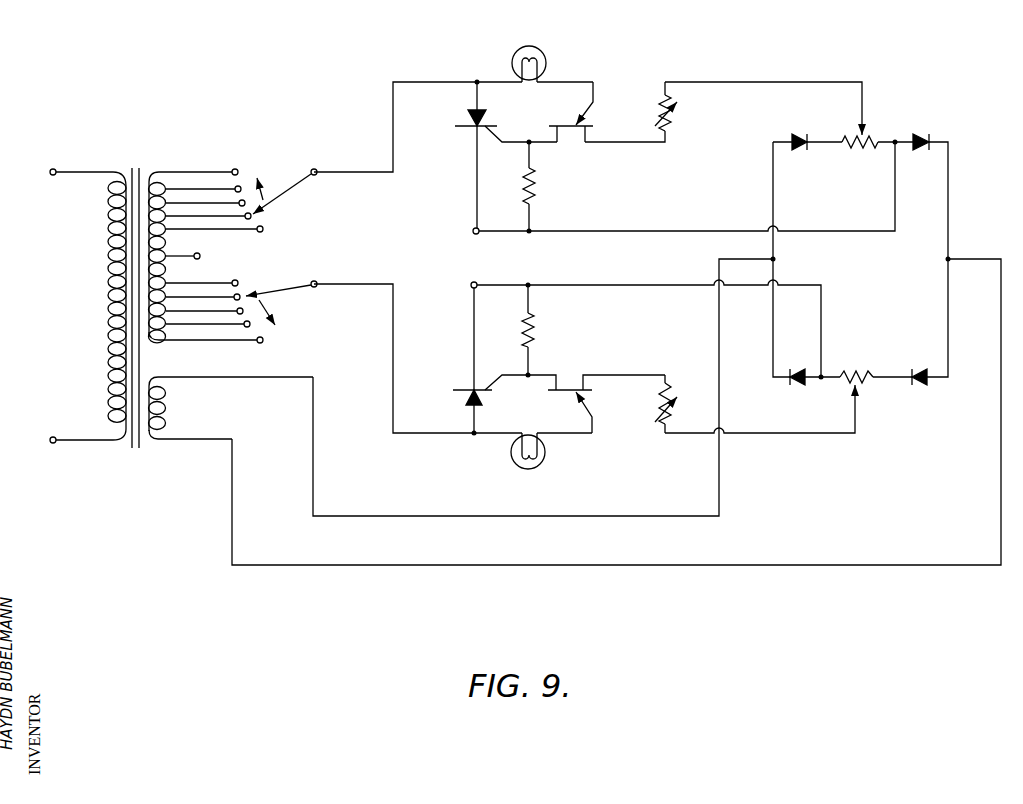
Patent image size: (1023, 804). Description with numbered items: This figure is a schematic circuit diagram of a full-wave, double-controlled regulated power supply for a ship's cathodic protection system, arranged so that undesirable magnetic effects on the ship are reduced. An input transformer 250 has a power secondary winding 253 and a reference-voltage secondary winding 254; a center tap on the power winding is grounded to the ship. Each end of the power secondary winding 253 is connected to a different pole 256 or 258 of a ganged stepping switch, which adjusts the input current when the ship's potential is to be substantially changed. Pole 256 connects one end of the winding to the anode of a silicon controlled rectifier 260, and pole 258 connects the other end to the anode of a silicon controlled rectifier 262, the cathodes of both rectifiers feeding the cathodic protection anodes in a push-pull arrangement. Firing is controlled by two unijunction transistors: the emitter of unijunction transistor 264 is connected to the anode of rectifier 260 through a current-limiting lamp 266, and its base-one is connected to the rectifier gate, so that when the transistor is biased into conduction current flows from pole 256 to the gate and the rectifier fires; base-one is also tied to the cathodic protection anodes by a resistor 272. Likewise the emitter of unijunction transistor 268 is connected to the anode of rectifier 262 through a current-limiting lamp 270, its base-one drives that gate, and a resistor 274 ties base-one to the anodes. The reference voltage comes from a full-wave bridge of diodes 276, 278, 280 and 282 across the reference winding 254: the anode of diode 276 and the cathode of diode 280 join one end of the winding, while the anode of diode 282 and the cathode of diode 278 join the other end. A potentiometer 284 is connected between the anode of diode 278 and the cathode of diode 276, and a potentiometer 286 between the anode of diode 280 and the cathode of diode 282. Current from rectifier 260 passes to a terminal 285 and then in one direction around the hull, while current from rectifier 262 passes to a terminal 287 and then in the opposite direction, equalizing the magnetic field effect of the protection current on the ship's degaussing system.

The input transformer 250 is at (136, 158).
The power secondary winding 253 is at (160, 170).
The reference-voltage secondary winding 254 is at (170, 408).
The stepping switch pole 256 is at (277, 170).
The stepping switch pole 258 is at (294, 300).
The silicon controlled rectifier 260 is at (470, 117).
The silicon controlled rectifier 262 is at (468, 400).
The unijunction transistor 264 is at (574, 133).
The current-limiting lamp 266 is at (541, 53).
The unijunction transistor 268 is at (570, 382).
The current-limiting lamp 270 is at (541, 463).
The resistor 272 is at (536, 191).
The resistor 274 is at (531, 329).
The diode 276 is at (791, 138).
The diode 278 is at (932, 136).
The diode 280 is at (791, 386).
The diode 282 is at (920, 386).
The potentiometer 284 is at (878, 137).
The terminal 285 is at (474, 231).
The potentiometer 286 is at (861, 372).
The terminal 287 is at (472, 285).